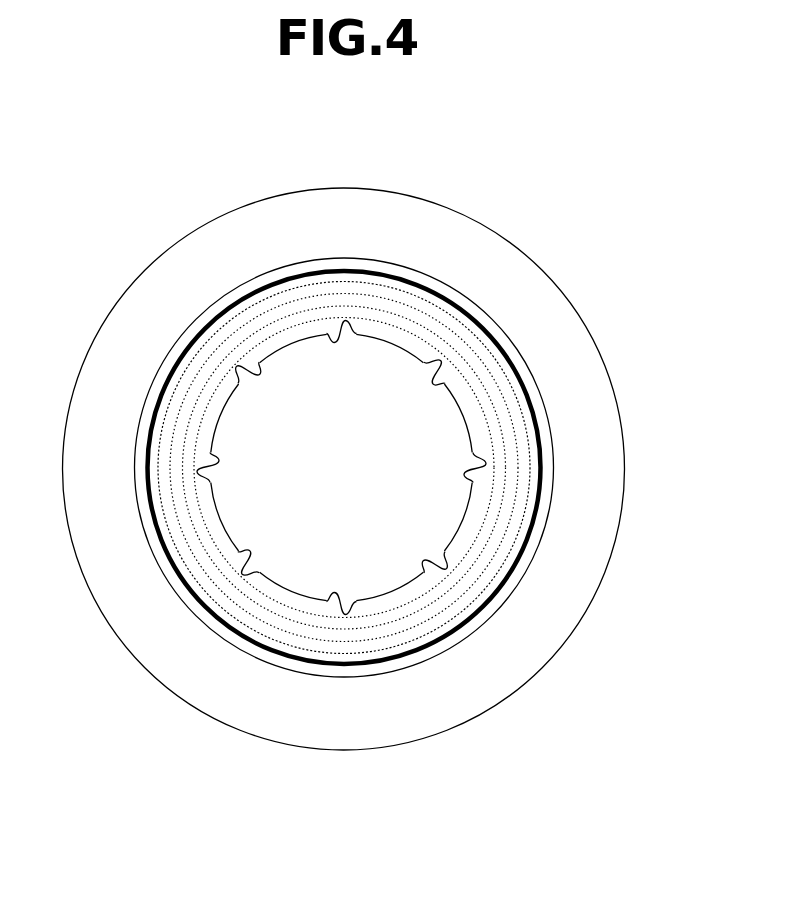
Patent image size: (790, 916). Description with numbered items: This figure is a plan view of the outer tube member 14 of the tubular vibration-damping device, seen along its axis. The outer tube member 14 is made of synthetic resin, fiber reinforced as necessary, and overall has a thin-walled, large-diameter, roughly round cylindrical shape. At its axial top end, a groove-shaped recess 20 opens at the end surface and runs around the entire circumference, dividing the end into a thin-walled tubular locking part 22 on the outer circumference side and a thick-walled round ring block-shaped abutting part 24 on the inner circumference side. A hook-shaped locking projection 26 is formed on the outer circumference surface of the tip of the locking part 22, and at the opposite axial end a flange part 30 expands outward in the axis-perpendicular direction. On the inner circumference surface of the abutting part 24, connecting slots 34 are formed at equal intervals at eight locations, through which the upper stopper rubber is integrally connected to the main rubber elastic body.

The outer tube member 14 is at (592, 202).
The recess 20 is at (352, 272).
The locking part 22 is at (203, 630).
The abutting part 24 is at (218, 384).
The locking projection 26 is at (535, 562).
The flange part 30 is at (600, 400).
The connecting slots 34 is at (333, 334).